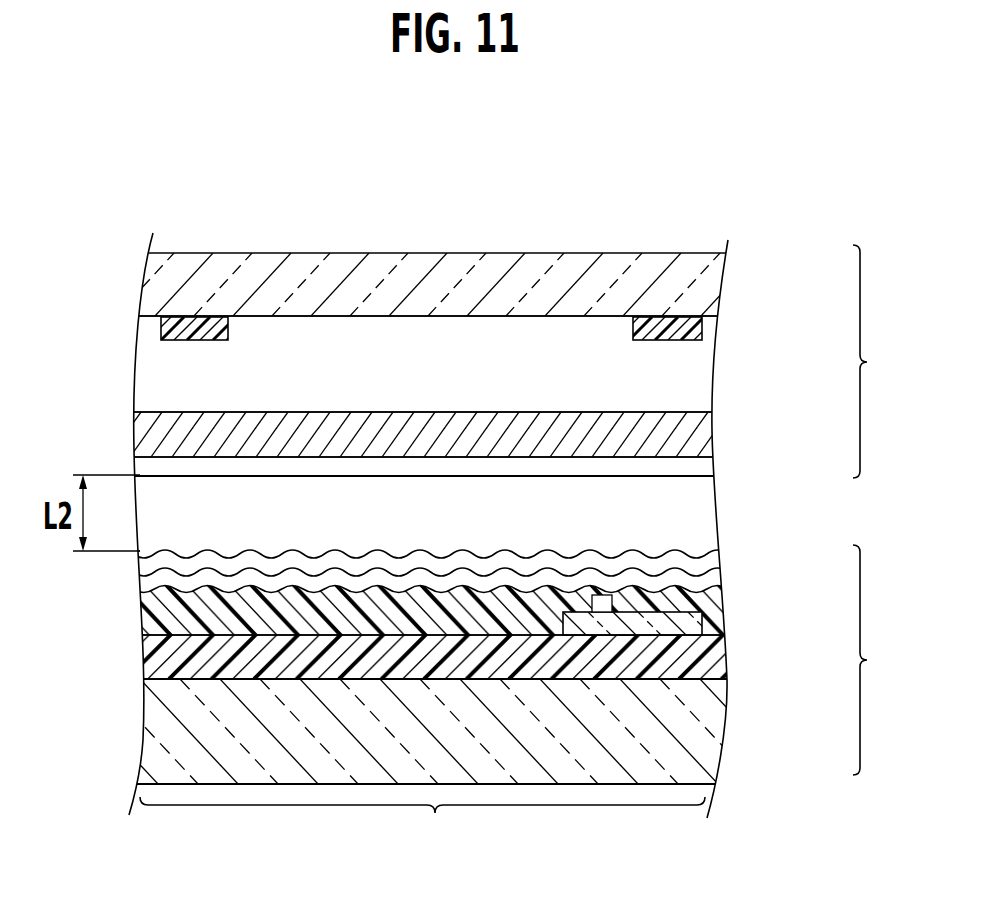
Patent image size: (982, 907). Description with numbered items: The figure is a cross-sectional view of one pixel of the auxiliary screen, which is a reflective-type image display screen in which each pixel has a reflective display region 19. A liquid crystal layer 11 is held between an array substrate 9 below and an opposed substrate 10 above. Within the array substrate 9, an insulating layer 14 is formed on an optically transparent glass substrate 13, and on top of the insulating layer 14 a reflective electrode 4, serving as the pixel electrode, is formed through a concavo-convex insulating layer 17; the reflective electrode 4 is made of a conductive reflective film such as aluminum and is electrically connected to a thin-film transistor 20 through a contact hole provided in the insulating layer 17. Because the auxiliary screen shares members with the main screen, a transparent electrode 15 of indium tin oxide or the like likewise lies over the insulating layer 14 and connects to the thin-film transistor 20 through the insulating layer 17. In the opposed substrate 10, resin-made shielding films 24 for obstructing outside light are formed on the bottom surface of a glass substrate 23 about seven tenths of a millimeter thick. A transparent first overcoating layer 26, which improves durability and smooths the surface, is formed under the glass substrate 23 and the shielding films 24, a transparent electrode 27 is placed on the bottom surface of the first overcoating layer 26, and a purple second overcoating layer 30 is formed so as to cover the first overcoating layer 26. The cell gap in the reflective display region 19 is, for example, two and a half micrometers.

The glass substrate 23 is at (707, 292).
The shielding films 24 is at (703, 330).
The first overcoating layer 26 is at (706, 362).
The second overcoating layer 30 is at (703, 434).
The transparent electrode 27 is at (706, 466).
The liquid crystal layer 11 is at (707, 520).
The reflective electrode 4 is at (707, 557).
The transparent electrode 15 is at (712, 578).
The insulating layer 17 is at (725, 602).
The thin-film transistor 20 is at (727, 627).
The insulating layer 14 is at (727, 665).
The glass substrate 13 is at (713, 730).
The reflective display region 19 is at (422, 828).
The opposed substrate 10 is at (881, 361).
The array substrate 9 is at (873, 660).